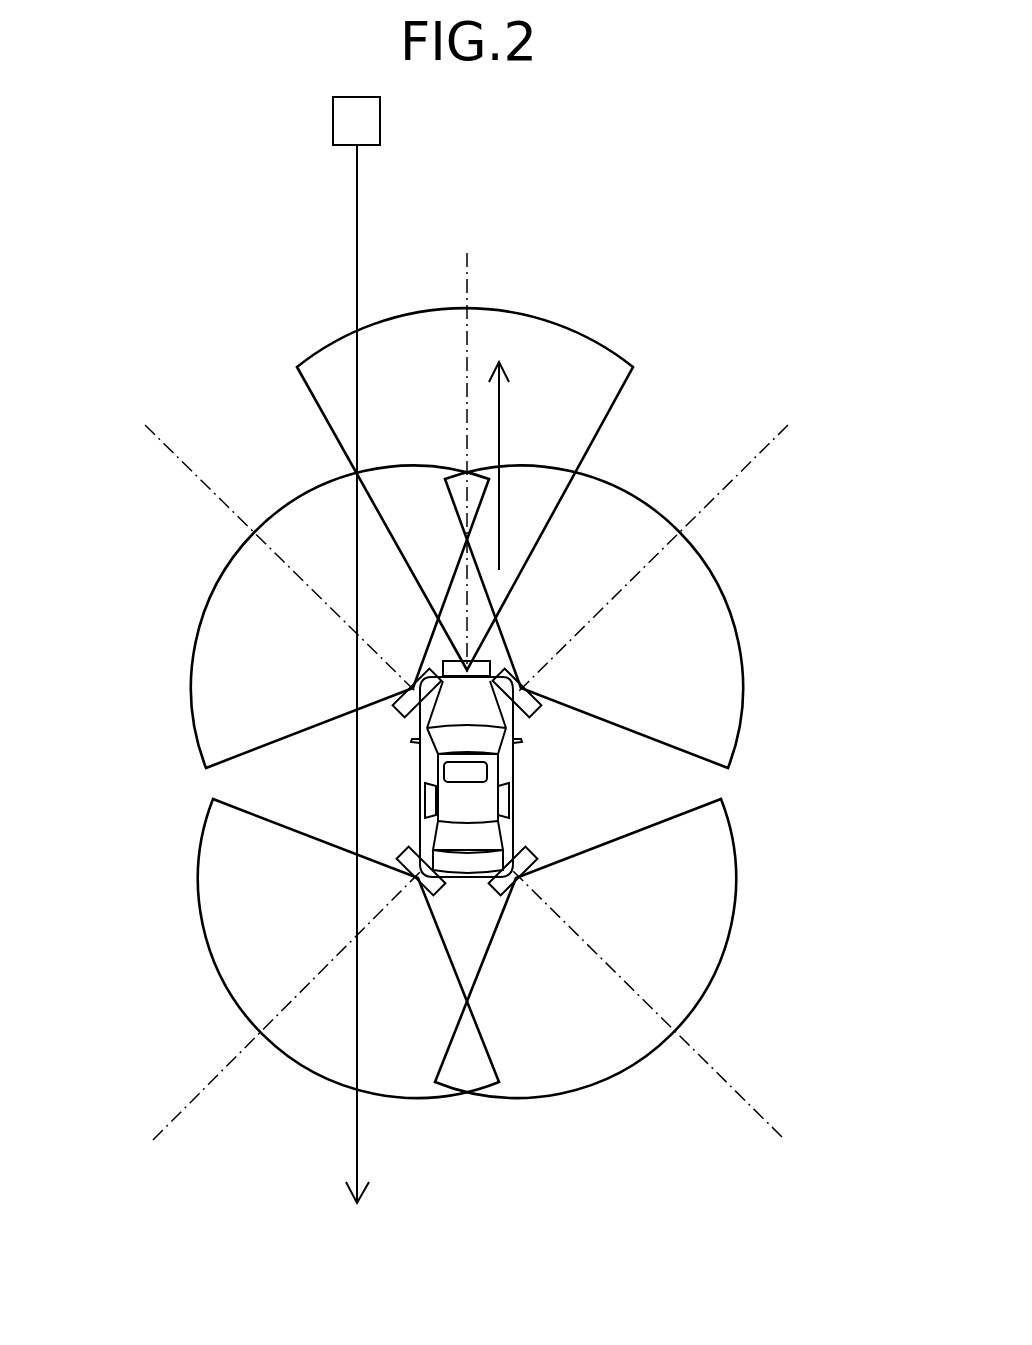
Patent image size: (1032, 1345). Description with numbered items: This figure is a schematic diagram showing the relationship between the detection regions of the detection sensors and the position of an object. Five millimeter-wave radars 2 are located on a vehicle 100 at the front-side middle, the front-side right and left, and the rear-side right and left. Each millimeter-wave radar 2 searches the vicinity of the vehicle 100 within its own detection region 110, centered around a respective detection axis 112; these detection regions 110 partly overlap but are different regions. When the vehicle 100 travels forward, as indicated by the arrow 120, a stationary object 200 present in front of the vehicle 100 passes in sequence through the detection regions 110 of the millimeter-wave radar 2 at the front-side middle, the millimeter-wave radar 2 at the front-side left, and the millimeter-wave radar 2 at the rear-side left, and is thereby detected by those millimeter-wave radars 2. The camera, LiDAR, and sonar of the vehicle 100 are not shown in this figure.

The millimeter-wave radar 2 is at (523, 686).
The vehicle 100 is at (515, 797).
The detection region 110 is at (410, 315).
The detection axis 112 is at (470, 285).
The arrow 120 is at (500, 405).
The object 200 is at (333, 122).